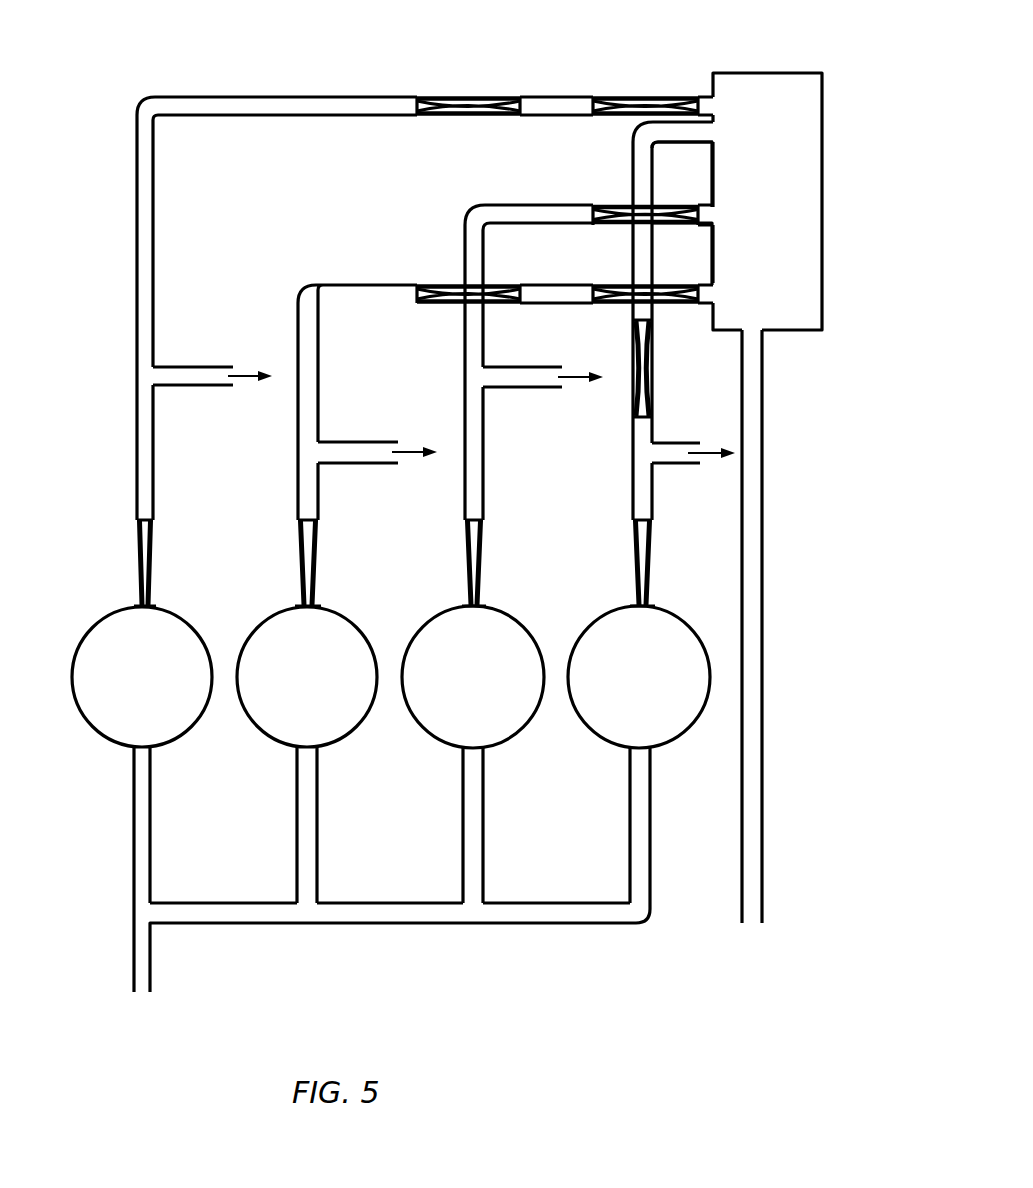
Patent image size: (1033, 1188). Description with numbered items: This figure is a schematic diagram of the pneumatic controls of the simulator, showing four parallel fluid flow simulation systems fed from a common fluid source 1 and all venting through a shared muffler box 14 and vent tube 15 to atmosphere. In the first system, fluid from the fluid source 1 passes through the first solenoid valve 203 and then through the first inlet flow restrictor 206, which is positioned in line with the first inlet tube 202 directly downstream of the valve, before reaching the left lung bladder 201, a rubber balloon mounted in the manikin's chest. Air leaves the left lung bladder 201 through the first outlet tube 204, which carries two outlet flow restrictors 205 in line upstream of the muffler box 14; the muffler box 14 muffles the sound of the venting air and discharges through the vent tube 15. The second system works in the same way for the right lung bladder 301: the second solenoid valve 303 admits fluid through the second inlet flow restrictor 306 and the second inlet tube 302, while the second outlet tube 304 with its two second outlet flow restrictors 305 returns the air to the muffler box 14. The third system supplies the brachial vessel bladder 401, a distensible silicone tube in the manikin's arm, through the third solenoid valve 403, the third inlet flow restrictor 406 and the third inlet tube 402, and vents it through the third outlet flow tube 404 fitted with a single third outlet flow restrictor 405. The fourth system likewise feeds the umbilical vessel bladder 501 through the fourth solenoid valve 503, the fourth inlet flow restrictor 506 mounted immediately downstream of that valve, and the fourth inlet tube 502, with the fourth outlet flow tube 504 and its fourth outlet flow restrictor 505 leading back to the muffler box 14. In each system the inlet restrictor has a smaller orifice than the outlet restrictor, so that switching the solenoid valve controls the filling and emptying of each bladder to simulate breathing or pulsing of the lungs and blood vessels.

The fluid source 1 is at (140, 1008).
The muffler box 14 is at (771, 73).
The vent tube 15 is at (742, 555).
The left lung bladder 201 is at (261, 391).
The first inlet tube 202 is at (190, 386).
The first solenoid valve 203 is at (104, 740).
The first outlet tube 204 is at (157, 172).
The outlet flow restrictors 205 is at (642, 97).
The first inlet flow restrictor 206 is at (135, 567).
The right lung bladder 301 is at (424, 467).
The second inlet tube 302 is at (365, 441).
The second solenoid valve 303 is at (255, 732).
The second outlet tube 304 is at (322, 285).
The second outlet flow restrictors 305 is at (640, 305).
The second inlet flow restrictor 306 is at (298, 557).
The brachial vessel bladder 401 is at (587, 393).
The third inlet tube 402 is at (517, 388).
The third solenoid valve 403 is at (427, 733).
The third outlet flow tube 404 is at (495, 205).
The third outlet flow restrictor 405 is at (622, 205).
The third inlet flow restrictor 406 is at (465, 560).
The umbilical vessel bladder 501 is at (719, 472).
The fourth inlet tube 502 is at (677, 443).
The fourth solenoid valve 503 is at (593, 735).
The fourth outlet flow tube 504 is at (660, 160).
The fourth outlet flow restrictor 505 is at (654, 362).
The fourth inlet flow restrictor 506 is at (633, 563).